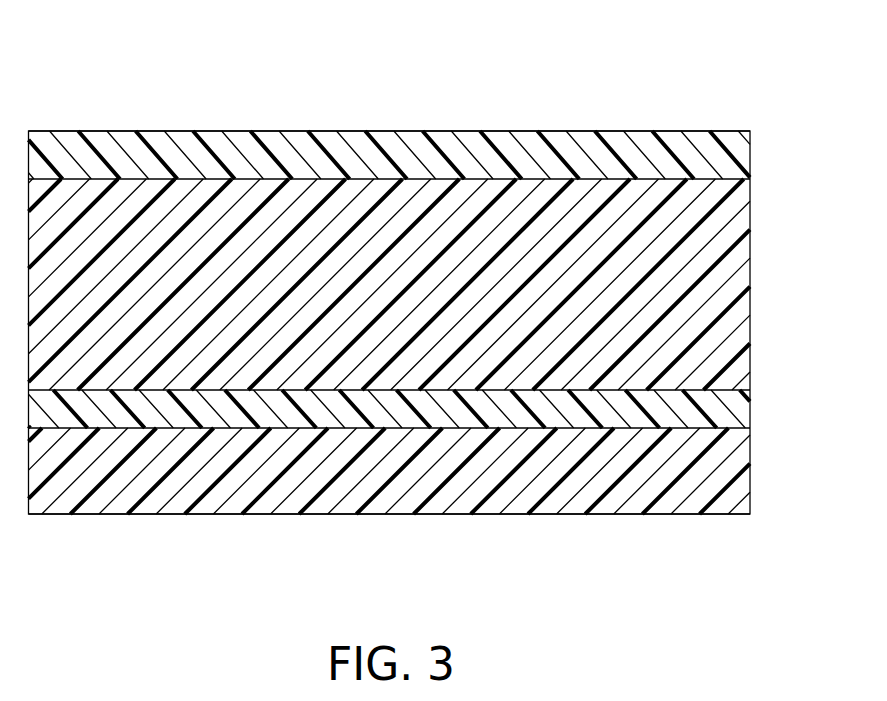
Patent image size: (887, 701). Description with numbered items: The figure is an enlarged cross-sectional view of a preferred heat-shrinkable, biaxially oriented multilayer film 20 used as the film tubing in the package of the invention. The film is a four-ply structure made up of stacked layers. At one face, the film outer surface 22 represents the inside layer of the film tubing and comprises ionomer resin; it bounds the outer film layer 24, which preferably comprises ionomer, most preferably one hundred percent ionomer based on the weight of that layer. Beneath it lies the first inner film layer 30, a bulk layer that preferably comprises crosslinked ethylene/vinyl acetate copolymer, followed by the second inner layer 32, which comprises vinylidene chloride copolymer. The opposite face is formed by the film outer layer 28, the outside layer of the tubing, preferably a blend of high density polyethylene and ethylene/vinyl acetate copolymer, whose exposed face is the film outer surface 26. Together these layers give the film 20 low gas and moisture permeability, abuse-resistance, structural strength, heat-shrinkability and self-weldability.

The heat-shrinkable, biaxially oriented film 20 is at (436, 313).
The film outer surface 22 is at (496, 131).
The outer film layer 24 is at (713, 155).
The film outer surface 26 is at (603, 514).
The film outer layer 28 is at (737, 490).
The first inner film layer 30 is at (703, 265).
The second inner layer 32 is at (737, 405).